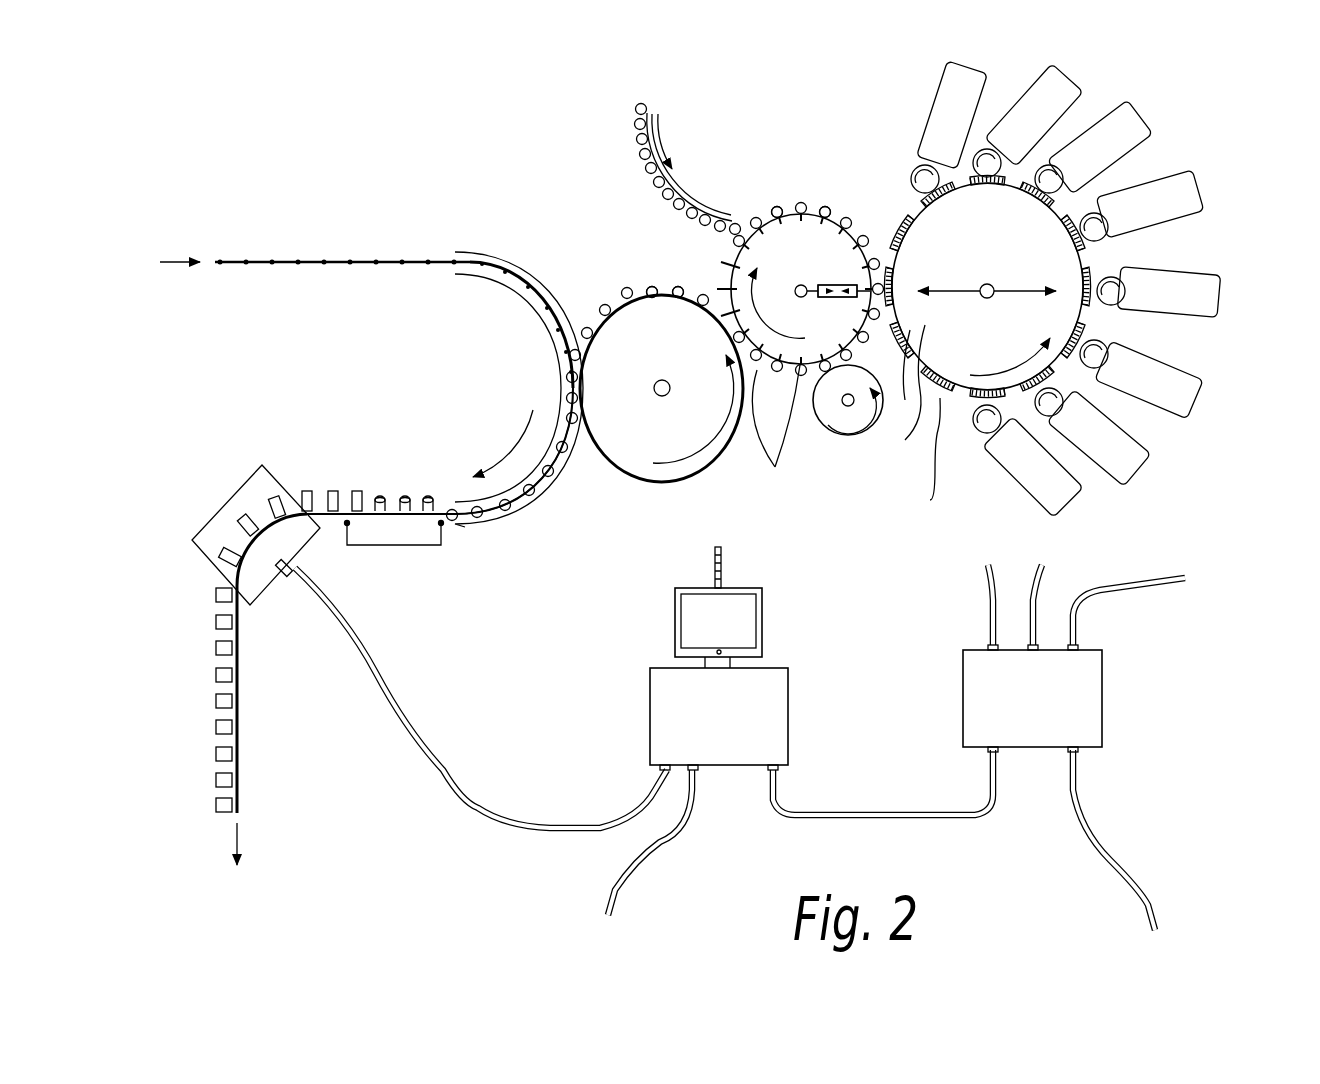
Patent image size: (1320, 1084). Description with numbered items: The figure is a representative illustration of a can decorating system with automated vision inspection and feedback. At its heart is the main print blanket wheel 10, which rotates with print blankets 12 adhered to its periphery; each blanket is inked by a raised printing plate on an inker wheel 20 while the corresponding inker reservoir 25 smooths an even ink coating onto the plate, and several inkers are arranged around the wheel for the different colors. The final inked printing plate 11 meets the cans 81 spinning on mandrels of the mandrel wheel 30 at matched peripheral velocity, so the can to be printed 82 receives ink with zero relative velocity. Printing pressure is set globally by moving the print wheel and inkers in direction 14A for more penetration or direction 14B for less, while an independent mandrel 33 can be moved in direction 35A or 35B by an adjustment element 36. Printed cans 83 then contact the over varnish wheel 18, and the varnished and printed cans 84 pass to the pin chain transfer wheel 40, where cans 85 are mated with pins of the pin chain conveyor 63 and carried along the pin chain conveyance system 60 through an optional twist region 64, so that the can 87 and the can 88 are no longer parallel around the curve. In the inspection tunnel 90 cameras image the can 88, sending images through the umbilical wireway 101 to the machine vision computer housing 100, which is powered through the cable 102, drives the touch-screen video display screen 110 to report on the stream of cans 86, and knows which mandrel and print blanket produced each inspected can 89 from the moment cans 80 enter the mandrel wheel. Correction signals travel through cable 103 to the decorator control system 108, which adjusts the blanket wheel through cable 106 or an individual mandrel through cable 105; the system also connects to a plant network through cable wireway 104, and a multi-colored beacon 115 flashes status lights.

The main print blanket wheel 10 is at (922, 200).
The inked printing plate 11 is at (906, 232).
The print blanket 12 is at (930, 500).
The adjustment direction for greater penetration 14A is at (964, 288).
The adjustment direction for less penetration 14B is at (1010, 288).
The over varnish wheel 18 is at (846, 436).
The inker wheel 20 is at (928, 166).
The inker reservoir 25 is at (964, 124).
The mandrel wheel 30 is at (727, 282).
The independent mandrel 33 is at (790, 220).
The mandrel adjustment direction 35A is at (843, 283).
The mandrel adjustment direction 35B is at (812, 298).
The adjustment element 36 is at (810, 285).
The pin chain transfer wheel 40 is at (686, 480).
The pin chain conveyance system 60 is at (466, 526).
The pin chain conveyor 63 is at (502, 258).
The twist section region 64 is at (395, 546).
The entering cans 80 is at (706, 203).
The cans on mandrels 81 is at (836, 216).
The can to be printed 82 is at (894, 287).
The printed cans 83 is at (908, 400).
The varnished and printed cans 84 is at (771, 421).
The cans on pin chain transfer wheel 85 is at (673, 295).
The stream of cans 86 is at (505, 512).
The can on curve 87 is at (286, 500).
The can being imaged 88 is at (245, 518).
The inspected can 89 is at (216, 603).
The inspection tunnel 90 is at (210, 524).
The machine vision computer housing 100 is at (650, 715).
The umbilical wireway cabling 101 is at (395, 710).
The power cable 102 is at (622, 860).
The signal cable 103 is at (918, 813).
The network cable wireway 104 is at (1130, 845).
The mandrel control cable 105 is at (985, 580).
The blanket wheel control cable 106 is at (1046, 588).
The decorator control system 108 is at (1103, 695).
The touch-screen video display screen 110 is at (745, 621).
The multi-colored beacon 115 is at (722, 572).